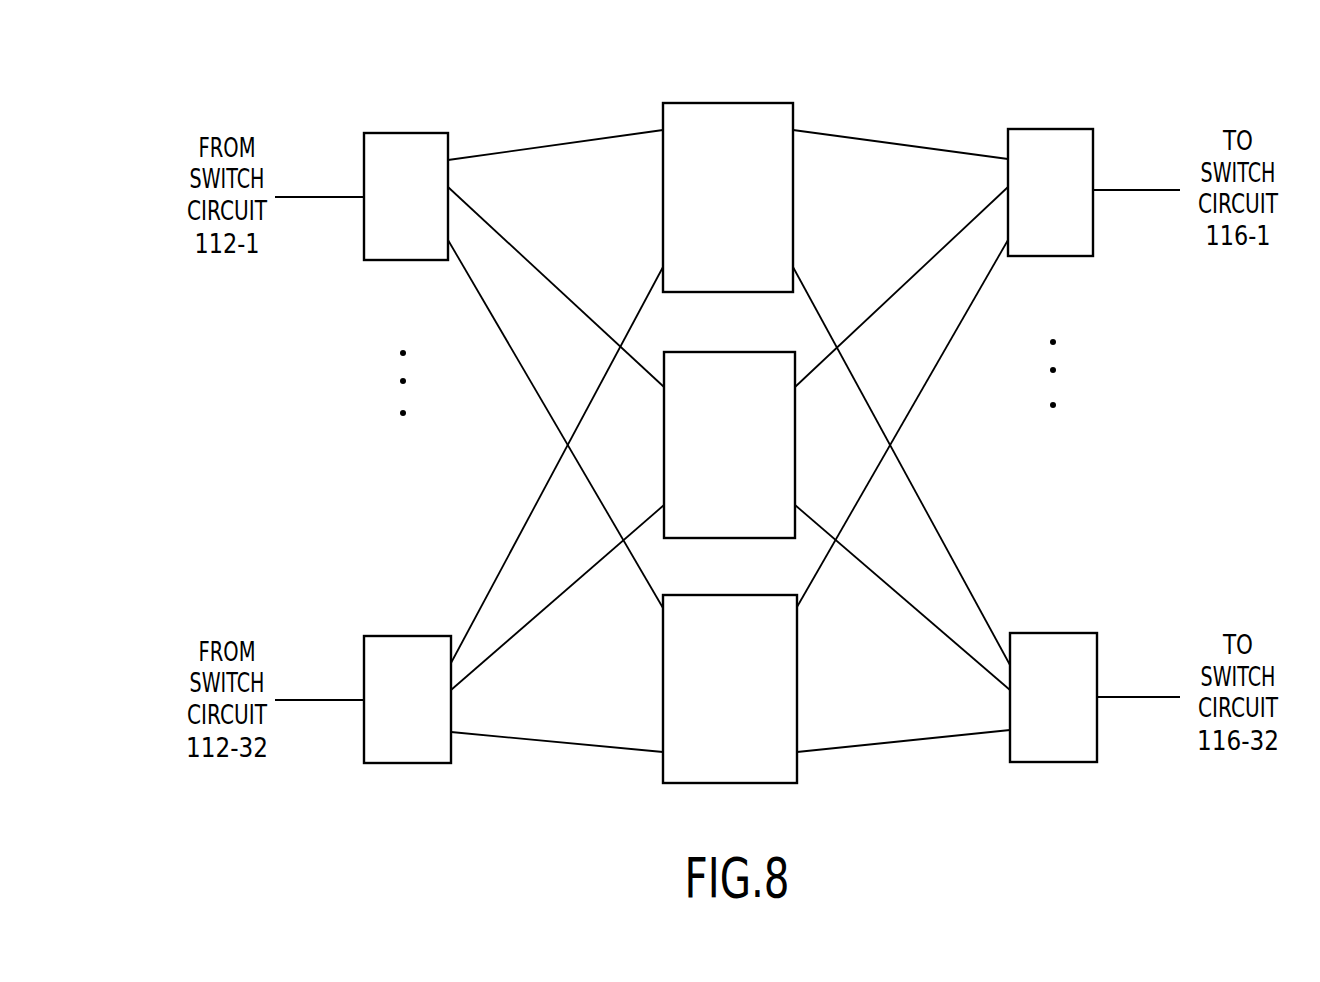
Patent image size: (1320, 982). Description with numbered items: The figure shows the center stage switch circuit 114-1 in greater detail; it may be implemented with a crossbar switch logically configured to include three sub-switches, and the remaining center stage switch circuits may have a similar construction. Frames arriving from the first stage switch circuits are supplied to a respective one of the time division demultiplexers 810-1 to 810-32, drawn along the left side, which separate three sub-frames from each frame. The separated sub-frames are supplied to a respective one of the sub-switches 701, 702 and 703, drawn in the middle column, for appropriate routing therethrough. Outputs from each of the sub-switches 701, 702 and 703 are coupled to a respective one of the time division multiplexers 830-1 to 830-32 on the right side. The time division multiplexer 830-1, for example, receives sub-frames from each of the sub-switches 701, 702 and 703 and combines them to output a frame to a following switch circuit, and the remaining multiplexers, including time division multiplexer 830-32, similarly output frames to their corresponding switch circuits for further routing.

The center stage switch circuit 114-1 is at (905, 73).
The time division demultiplexer 810-1 is at (405, 133).
The time division demultiplexer 810-32 is at (392, 636).
The sub-switch 701 is at (705, 103).
The sub-switch 702 is at (797, 477).
The sub-switch 703 is at (663, 680).
The time division multiplexer 830-1 is at (1060, 129).
The time division multiplexer 830-32 is at (1060, 633).